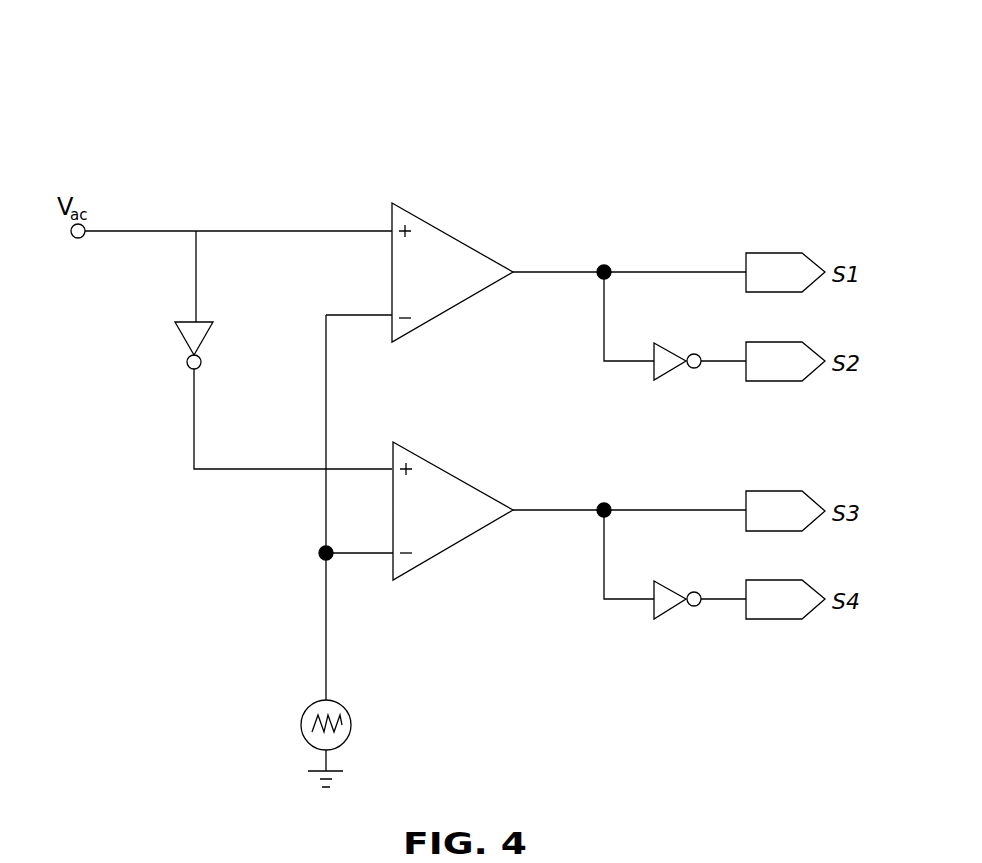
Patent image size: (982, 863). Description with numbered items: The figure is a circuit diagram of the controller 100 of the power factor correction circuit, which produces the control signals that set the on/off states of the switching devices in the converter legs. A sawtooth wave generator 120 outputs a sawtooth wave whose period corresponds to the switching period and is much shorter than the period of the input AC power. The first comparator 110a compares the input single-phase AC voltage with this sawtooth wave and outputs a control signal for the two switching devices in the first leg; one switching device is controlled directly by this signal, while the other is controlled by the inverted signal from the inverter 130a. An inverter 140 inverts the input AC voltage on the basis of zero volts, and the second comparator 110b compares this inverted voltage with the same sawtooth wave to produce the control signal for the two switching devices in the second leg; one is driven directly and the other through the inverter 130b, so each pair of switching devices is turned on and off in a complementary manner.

The controller 100 is at (553, 107).
The first comparator 110a is at (452, 236).
The second comparator 110b is at (452, 475).
The sawtooth wave generator 120 is at (352, 725).
The inverter 130a is at (672, 382).
The inverter 130b is at (672, 620).
The inverter 140 is at (178, 342).